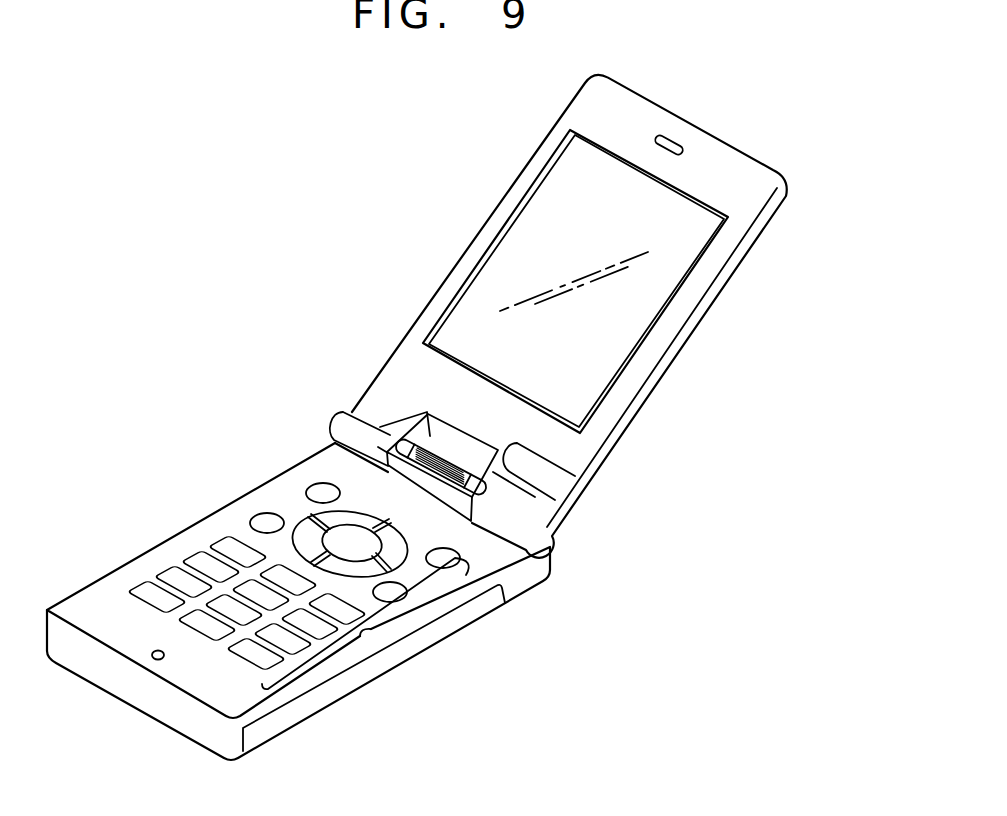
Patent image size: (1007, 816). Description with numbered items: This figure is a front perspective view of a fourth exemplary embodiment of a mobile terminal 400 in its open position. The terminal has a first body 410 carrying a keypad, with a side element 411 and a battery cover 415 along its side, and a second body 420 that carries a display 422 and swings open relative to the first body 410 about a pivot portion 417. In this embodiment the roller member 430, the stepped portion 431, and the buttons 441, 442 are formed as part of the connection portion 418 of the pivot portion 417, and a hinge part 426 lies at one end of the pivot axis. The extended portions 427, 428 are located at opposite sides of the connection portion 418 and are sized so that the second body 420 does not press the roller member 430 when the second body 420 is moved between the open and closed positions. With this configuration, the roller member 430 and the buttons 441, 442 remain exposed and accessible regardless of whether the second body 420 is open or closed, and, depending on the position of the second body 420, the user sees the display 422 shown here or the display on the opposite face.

The mobile terminal 400 is at (327, 180).
The first body 410 is at (527, 592).
The side key 411 is at (370, 632).
The battery cover 415 is at (300, 710).
The pivot portion 417 is at (212, 356).
The connection portion 418 is at (378, 447).
The second body 420 is at (682, 347).
The display 422 is at (545, 212).
The hinge part 426 is at (536, 453).
The extended portion 427 is at (358, 432).
The extended portion 428 is at (473, 518).
The roller member 430 is at (435, 430).
The stepped portion 431 is at (533, 498).
The button 441 is at (410, 437).
The button 442 is at (473, 437).